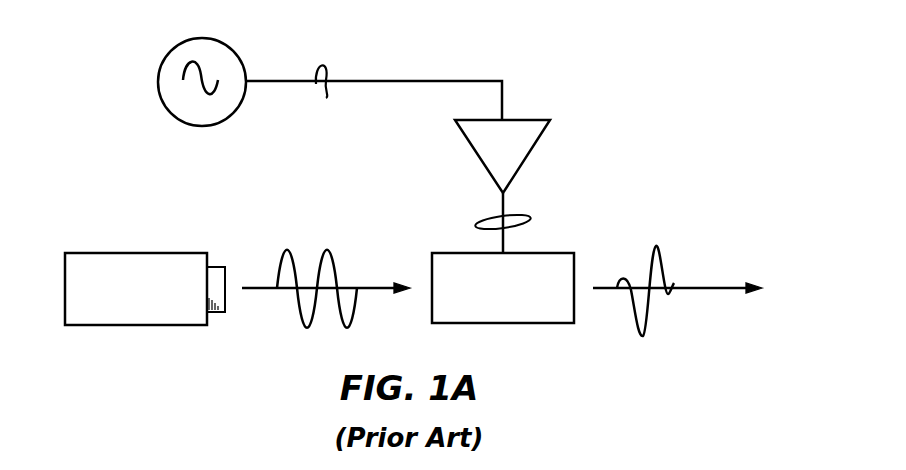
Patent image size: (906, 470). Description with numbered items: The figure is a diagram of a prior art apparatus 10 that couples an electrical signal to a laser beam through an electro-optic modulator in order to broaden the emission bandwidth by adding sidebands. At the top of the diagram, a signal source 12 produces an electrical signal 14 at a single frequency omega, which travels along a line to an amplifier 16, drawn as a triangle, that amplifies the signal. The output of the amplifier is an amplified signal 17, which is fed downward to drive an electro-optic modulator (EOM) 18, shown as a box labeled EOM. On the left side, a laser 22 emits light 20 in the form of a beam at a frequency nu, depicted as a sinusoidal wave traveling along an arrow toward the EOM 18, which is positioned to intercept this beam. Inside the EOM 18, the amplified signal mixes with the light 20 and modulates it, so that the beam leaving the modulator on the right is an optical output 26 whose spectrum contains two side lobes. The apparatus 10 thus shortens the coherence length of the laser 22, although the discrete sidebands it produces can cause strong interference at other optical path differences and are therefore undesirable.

The prior art apparatus 10 is at (636, 62).
The signal source 12 is at (233, 120).
The electrical signal 14 is at (326, 98).
The amplifier 16 is at (530, 154).
The amplified signal 17 is at (480, 228).
The electro-optic modulator (EOM) 18 is at (528, 323).
The light 20 is at (305, 322).
The laser 22 is at (118, 253).
The optical output 26 is at (660, 258).